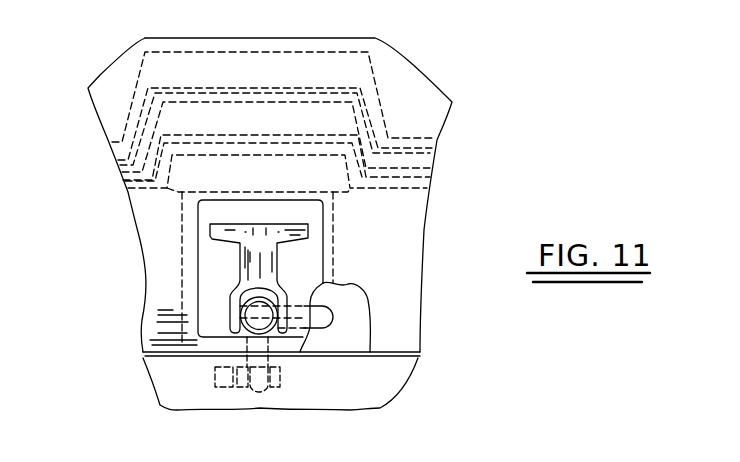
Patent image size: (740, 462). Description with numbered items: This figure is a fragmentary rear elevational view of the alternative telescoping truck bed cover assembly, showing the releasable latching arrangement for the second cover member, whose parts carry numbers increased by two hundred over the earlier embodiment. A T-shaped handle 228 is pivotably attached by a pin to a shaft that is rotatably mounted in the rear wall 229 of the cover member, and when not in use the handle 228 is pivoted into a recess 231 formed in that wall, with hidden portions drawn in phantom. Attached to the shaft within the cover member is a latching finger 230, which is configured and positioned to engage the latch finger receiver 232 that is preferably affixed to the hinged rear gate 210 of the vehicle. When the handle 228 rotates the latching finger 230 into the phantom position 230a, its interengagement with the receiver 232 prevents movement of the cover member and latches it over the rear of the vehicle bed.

The rear gate 210 is at (380, 380).
The T-shaped handle 228 is at (308, 232).
The rear wall 229 is at (407, 117).
The latching finger 230 is at (332, 315).
The latching finger position 230a is at (280, 390).
The recess 231 is at (202, 217).
The latch finger receiver 232 is at (225, 388).